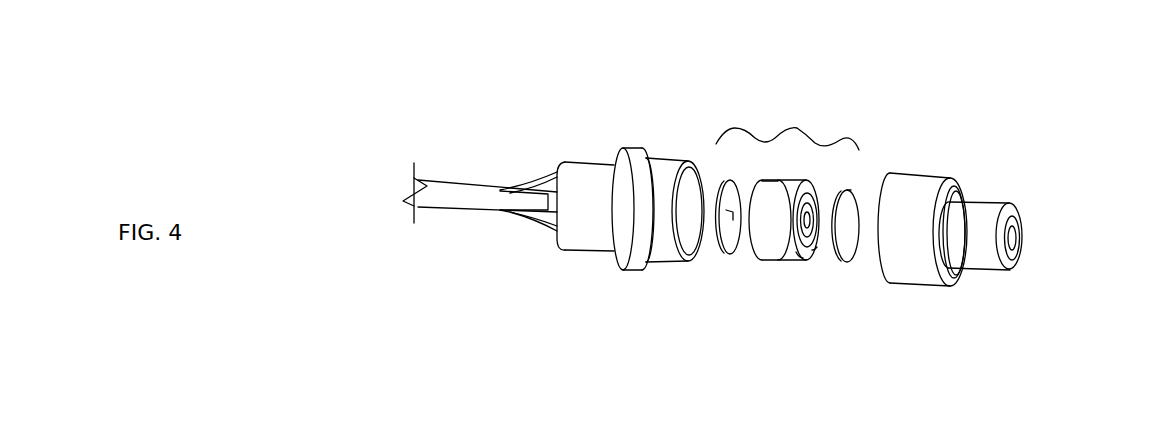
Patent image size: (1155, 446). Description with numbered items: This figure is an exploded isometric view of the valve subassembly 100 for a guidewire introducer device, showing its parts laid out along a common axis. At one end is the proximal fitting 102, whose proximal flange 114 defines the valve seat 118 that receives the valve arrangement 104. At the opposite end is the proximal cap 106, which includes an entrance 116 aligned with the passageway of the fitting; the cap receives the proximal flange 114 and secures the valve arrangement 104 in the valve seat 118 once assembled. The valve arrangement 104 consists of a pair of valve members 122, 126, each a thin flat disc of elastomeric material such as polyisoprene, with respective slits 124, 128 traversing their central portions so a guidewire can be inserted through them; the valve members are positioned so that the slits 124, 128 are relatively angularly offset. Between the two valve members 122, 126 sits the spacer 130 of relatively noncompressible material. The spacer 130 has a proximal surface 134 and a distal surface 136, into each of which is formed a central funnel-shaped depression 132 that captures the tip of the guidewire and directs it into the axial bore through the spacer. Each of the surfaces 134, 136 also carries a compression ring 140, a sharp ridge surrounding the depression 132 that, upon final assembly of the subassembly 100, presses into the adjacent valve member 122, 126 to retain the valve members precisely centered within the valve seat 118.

The valve subassembly 100 is at (568, 146).
The proximal fitting 102 is at (598, 158).
The valve arrangement 104 is at (800, 128).
The proximal cap 106 is at (953, 178).
The proximal flange 114 is at (668, 157).
The entrance 116 is at (1020, 228).
The valve seat 118 is at (686, 238).
The valve member 122 is at (718, 180).
The slit 124 is at (728, 218).
The valve member 126 is at (858, 184).
The slit 128 is at (849, 219).
The spacer 130 is at (771, 258).
The central funnel-shaped depression 132 is at (813, 214).
The proximal surface 134 is at (761, 178).
The distal surface 136 is at (799, 250).
The compression ring 140 is at (817, 253).